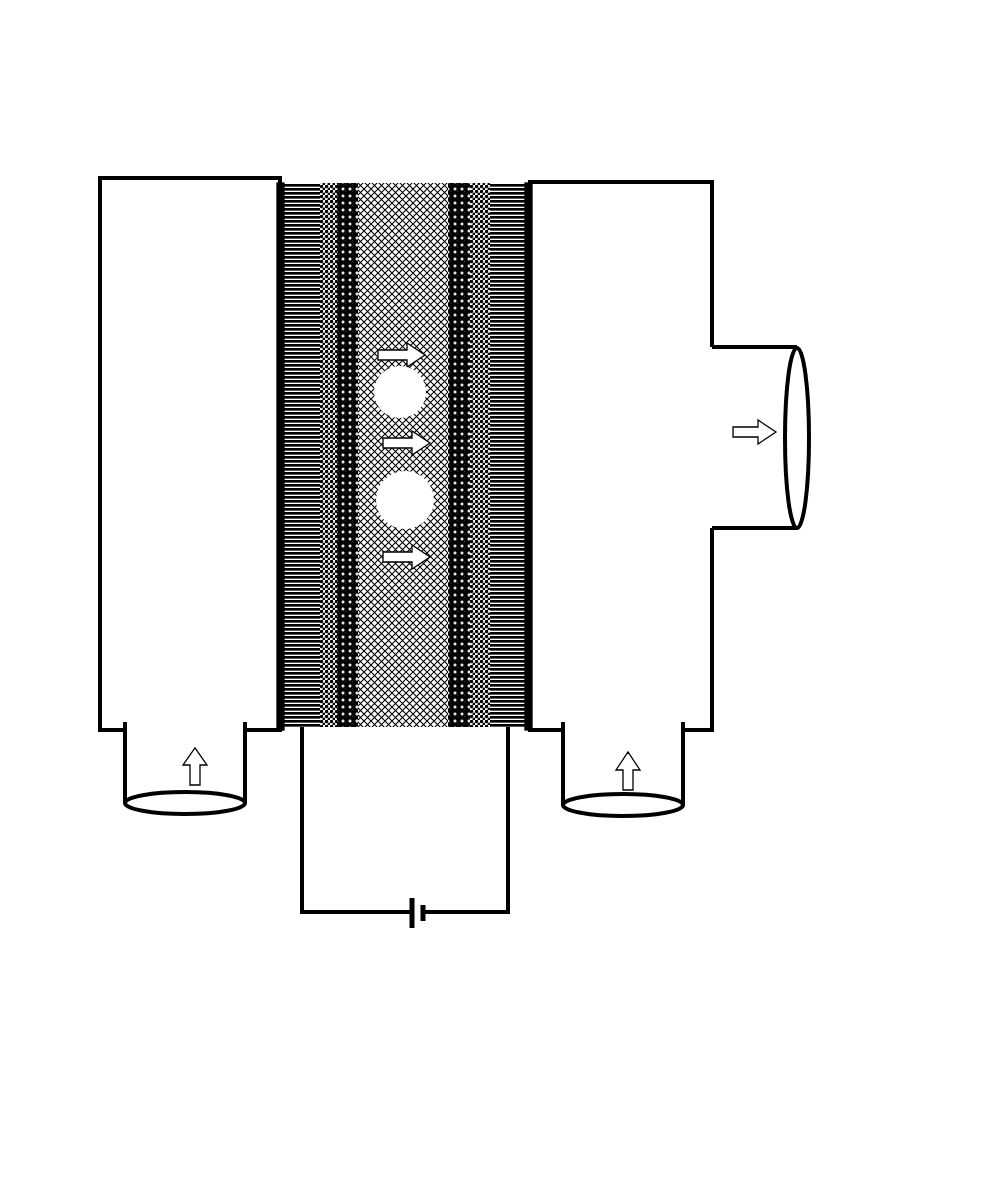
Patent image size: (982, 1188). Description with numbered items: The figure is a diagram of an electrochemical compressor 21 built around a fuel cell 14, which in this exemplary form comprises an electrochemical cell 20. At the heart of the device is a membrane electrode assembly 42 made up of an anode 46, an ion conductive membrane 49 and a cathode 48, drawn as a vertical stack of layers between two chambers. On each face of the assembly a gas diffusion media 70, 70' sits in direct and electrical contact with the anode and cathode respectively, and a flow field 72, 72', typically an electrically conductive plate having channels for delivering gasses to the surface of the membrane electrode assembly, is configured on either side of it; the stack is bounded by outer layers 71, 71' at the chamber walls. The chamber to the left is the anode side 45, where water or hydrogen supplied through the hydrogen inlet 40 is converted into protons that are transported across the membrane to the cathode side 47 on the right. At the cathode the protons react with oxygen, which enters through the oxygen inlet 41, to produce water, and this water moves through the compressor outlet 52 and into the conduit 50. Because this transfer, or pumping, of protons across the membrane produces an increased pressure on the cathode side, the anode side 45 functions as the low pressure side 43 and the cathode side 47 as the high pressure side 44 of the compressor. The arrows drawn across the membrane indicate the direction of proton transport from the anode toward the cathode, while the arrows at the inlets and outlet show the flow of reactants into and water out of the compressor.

The fuel cell 14 is at (683, 178).
The electrochemical cell 20 is at (492, 722).
The electrochemical compressor 21 is at (728, 208).
The hydrogen inlet 40 is at (143, 762).
The oxygen inlet 41 is at (673, 750).
The membrane electrode assembly 42 is at (492, 722).
The low pressure side 43 is at (217, 208).
The high pressure side 44 is at (632, 223).
The anode side 45 is at (278, 265).
The anode 46 is at (353, 183).
The cathode side 47 is at (533, 284).
The cathode 48 is at (462, 183).
The ion conductive membrane 49 is at (400, 183).
The conduit 50 is at (762, 497).
The compressor outlet 52 is at (748, 380).
The gas diffusion media 70 is at (311, 409).
The gas diffusion media 70' is at (495, 403).
The anode current collector 71 is at (232, 404).
The cathode current collector 71' is at (573, 404).
The flow field 72 is at (276, 395).
The flow field 72' is at (530, 393).